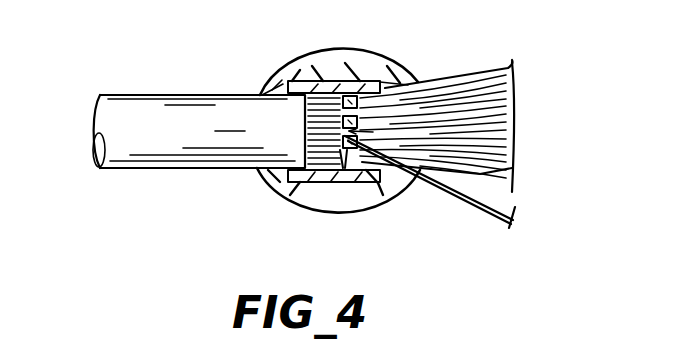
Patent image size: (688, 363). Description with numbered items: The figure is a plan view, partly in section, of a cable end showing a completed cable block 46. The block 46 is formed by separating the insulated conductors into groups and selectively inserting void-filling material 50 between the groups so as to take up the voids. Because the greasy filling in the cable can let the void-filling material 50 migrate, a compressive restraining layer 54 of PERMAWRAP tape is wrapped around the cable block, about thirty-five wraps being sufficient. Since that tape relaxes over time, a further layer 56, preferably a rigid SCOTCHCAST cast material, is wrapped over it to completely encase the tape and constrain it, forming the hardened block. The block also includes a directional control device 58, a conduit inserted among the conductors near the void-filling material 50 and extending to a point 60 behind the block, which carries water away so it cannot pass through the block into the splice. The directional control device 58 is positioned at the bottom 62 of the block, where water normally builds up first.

The block 46 is at (245, 78).
The void-filling material 50 is at (344, 98).
The layer of PERMAWRAP tape 54 is at (375, 84).
The further layer 56 is at (292, 82).
The directional control device 58 is at (458, 198).
The point behind the block 60 is at (305, 183).
The bottom of the block 62 is at (338, 157).